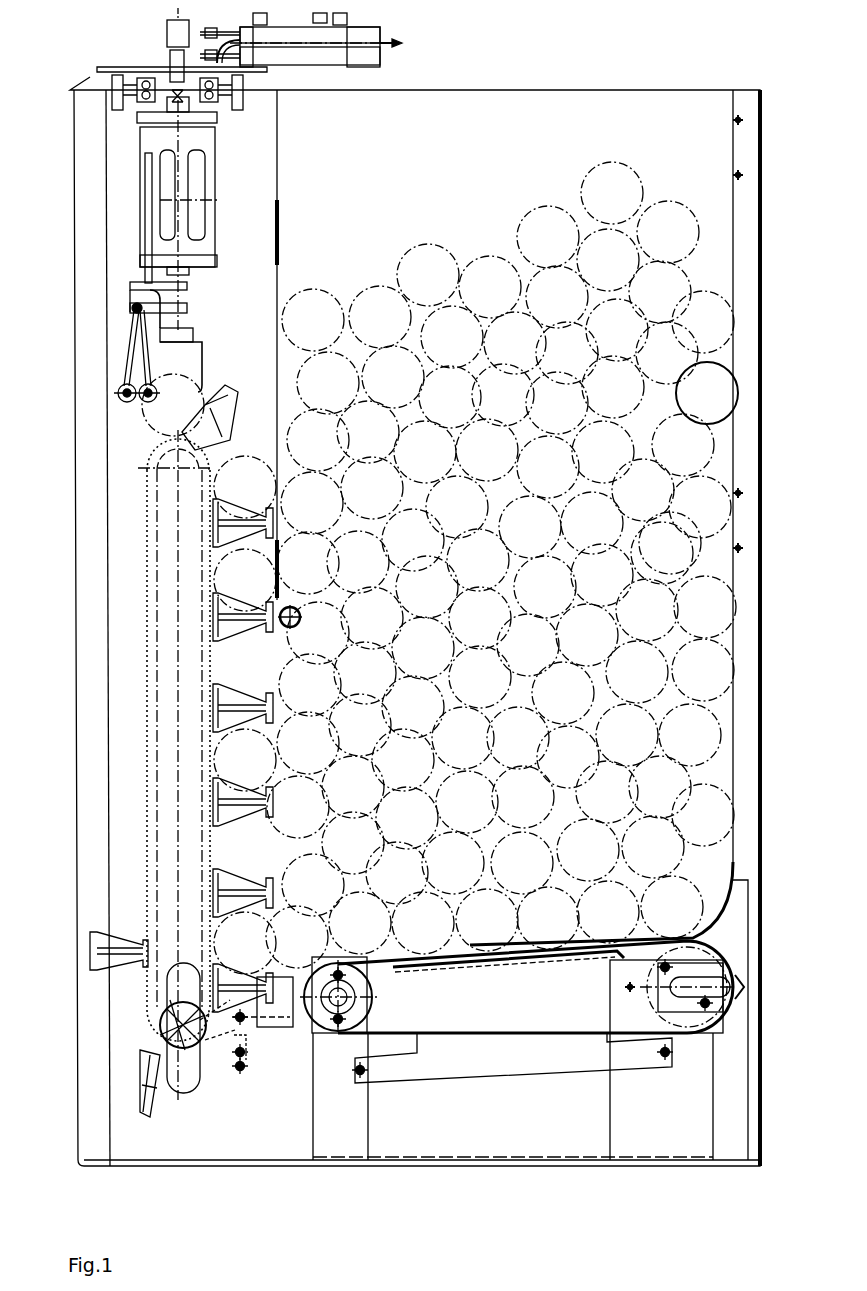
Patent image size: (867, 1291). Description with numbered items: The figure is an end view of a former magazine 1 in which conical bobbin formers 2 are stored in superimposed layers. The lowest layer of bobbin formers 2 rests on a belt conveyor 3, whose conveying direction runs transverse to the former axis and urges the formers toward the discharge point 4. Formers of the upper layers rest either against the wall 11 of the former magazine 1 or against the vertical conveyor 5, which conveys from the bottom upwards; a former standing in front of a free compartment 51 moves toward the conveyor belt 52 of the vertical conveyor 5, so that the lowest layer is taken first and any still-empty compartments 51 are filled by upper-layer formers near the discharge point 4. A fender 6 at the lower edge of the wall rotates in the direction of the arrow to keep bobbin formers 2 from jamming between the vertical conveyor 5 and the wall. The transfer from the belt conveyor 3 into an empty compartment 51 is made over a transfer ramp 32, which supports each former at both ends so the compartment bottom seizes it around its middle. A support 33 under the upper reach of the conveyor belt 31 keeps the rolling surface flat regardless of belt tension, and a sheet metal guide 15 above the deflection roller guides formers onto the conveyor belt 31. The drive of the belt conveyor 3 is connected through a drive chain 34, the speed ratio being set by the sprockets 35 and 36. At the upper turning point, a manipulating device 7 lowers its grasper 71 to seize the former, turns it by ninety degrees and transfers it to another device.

The former magazine 1 is at (653, 160).
The bobbin formers 2 is at (713, 668).
The belt conveyor 3 is at (545, 985).
The discharge point 4 is at (248, 847).
The vertical conveyor 5 is at (170, 582).
The fender 6 is at (275, 630).
The manipulating device 7 is at (132, 183).
The wall 11 is at (263, 227).
The sheet metal guide 15 is at (717, 903).
The conveyor belt 31 is at (455, 1054).
The transfer ramp 32 is at (271, 1035).
The support 33 is at (497, 955).
The drive chain 34 is at (218, 1042).
The sprocket 35 is at (190, 1057).
The sprocket 36 is at (338, 1032).
The compartment 51 is at (245, 876).
The conveyor belt 52 is at (147, 763).
The grasper 71 is at (198, 357).